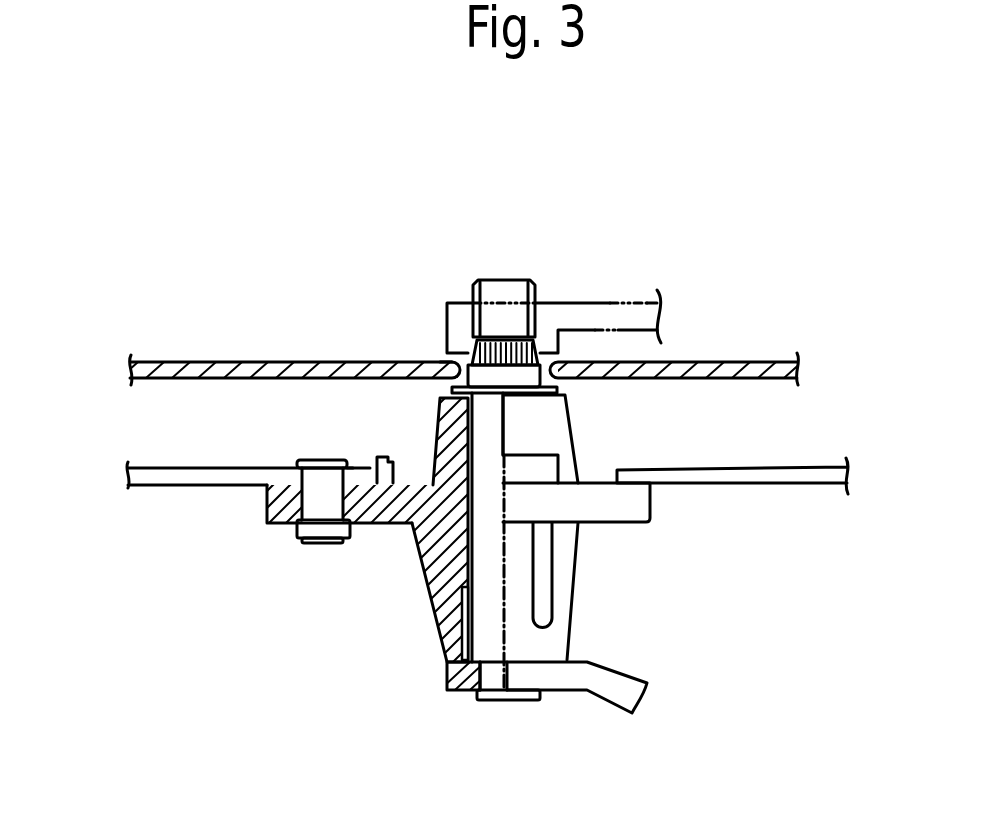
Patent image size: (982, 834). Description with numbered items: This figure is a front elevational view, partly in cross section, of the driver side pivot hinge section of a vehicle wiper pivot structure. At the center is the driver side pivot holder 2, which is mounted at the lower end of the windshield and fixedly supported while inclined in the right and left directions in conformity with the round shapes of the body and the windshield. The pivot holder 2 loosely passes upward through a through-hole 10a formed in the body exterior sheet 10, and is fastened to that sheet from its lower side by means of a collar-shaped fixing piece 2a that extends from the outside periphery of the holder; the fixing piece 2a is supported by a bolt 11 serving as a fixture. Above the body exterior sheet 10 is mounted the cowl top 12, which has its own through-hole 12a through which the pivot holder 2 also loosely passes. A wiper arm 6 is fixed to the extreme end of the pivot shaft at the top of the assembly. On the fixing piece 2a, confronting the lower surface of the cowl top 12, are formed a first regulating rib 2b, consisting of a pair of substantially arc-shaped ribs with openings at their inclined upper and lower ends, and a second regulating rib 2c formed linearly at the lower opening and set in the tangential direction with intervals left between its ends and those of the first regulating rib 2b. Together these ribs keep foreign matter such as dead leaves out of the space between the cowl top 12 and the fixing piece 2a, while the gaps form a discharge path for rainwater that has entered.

The driver side pivot holder 2 is at (437, 642).
The fixing piece 2a is at (365, 523).
The first regulating rib 2b is at (542, 472).
The second regulating rib 2c is at (383, 457).
The wiper arm 6 is at (550, 323).
The body exterior sheet 10 is at (153, 478).
The through-hole 10a is at (362, 465).
The bolt 11 is at (297, 462).
The cowl top 12 is at (240, 362).
The through-hole 12a is at (453, 357).